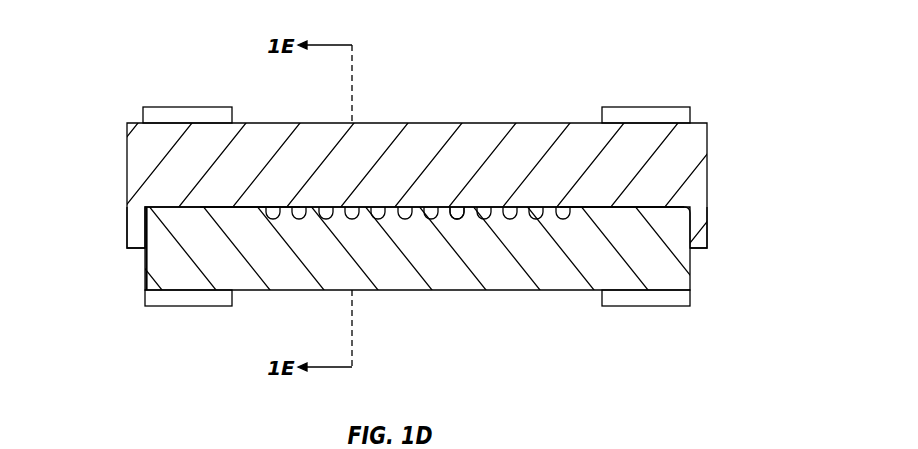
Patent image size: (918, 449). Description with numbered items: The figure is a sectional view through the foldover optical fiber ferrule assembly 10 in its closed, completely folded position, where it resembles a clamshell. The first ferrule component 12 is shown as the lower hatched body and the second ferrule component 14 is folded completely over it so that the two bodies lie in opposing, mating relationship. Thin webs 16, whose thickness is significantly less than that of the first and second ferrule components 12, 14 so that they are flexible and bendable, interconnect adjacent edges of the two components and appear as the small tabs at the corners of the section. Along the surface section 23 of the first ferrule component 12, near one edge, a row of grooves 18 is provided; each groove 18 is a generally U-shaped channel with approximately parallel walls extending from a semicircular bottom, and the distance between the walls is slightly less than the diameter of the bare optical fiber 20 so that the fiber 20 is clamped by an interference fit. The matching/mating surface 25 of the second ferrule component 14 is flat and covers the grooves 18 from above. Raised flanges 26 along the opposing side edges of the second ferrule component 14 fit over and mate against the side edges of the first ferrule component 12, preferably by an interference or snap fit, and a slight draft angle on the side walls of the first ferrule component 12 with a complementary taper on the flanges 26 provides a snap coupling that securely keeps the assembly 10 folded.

The foldover optical fiber ferrule assembly 10 is at (562, 83).
The first ferrule component 12 is at (285, 283).
The second ferrule component 14 is at (424, 133).
The webs 16 is at (188, 107).
The grooves 18 is at (483, 218).
The optical fiber 20 is at (458, 213).
The surface section 23 is at (594, 206).
The matching/mating surface 25 is at (250, 207).
The raised flanges 26 is at (126, 243).